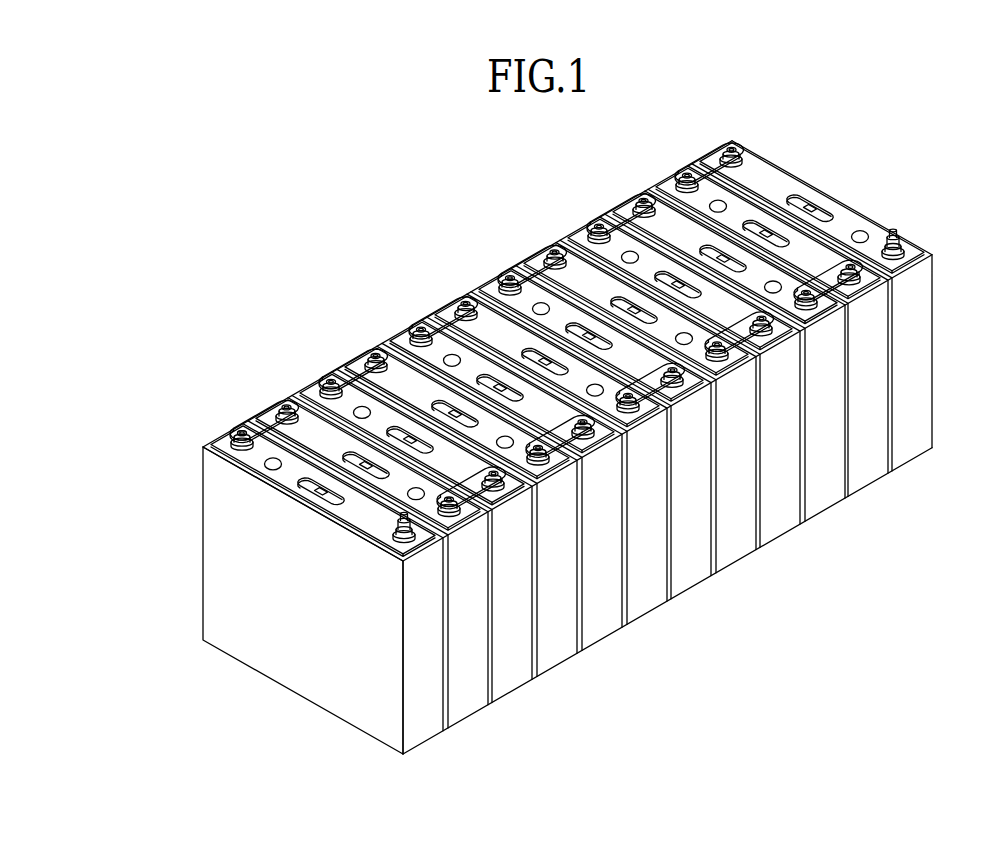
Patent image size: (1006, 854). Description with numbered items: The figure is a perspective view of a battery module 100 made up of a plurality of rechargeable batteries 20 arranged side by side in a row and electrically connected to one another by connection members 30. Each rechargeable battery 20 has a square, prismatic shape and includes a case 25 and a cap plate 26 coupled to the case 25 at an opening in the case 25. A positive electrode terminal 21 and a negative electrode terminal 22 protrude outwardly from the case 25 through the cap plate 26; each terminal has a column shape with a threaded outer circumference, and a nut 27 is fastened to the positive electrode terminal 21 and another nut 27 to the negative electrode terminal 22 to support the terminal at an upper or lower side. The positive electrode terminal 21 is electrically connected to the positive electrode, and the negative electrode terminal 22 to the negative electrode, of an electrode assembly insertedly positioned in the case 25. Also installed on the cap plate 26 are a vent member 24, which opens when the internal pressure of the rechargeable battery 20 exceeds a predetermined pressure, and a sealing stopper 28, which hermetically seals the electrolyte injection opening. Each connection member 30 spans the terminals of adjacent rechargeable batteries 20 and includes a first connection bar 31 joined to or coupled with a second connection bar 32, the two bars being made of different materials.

The battery module 100 is at (441, 246).
The rechargeable battery 20 is at (782, 527).
The positive electrode terminal 21 is at (231, 427).
The negative electrode terminal 22 is at (287, 401).
The vent member 24 is at (813, 208).
The case 25 is at (420, 724).
The cap plate 26 is at (353, 513).
The nut 27 is at (393, 537).
The sealing stopper 28 is at (266, 468).
The connection member 30 is at (245, 385).
The first connection bar 31 is at (275, 407).
The second connection bar 32 is at (235, 426).